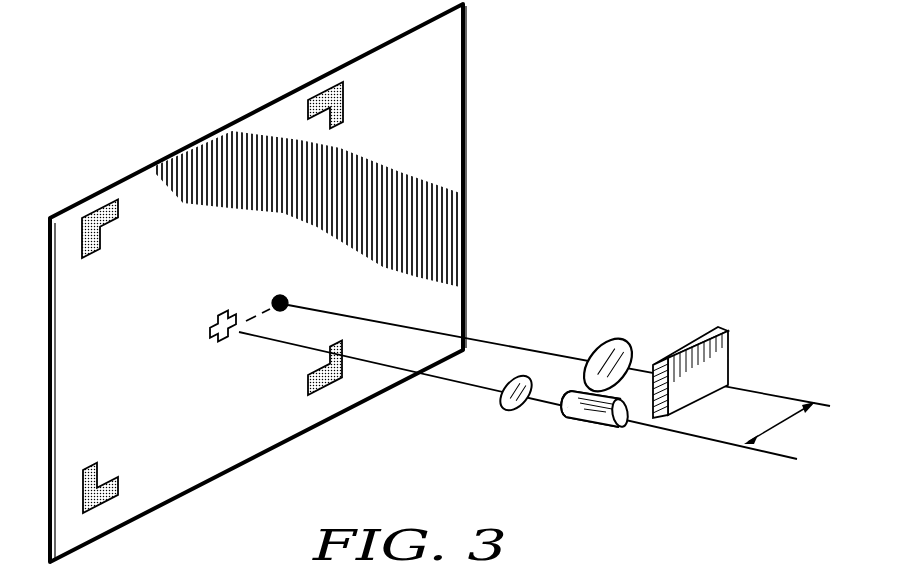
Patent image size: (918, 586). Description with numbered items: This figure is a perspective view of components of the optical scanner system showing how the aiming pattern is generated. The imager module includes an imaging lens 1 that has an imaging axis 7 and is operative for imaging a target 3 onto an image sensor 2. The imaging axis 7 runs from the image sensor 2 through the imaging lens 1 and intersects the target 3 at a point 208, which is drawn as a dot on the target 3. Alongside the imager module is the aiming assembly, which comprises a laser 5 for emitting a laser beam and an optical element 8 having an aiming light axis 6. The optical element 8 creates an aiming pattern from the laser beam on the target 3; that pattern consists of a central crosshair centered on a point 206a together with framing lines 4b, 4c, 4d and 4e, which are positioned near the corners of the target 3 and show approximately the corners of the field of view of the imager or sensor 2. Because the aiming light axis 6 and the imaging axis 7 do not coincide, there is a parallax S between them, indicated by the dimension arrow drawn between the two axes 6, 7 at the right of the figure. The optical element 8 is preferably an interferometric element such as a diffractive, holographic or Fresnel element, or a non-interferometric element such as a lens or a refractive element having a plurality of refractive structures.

The imaging lens 1 is at (600, 338).
The image sensor 2 is at (702, 333).
The target 3 is at (199, 141).
The framing line 4b is at (97, 206).
The framing line 4c is at (318, 94).
The framing line 4d is at (329, 392).
The framing line 4e is at (103, 512).
The laser 5 is at (594, 424).
The aiming light axis 6 is at (460, 384).
The imaging axis 7 is at (533, 349).
The optical element 8 is at (517, 413).
The point 206a is at (221, 311).
The point 208 is at (276, 296).
The parallax S is at (779, 423).